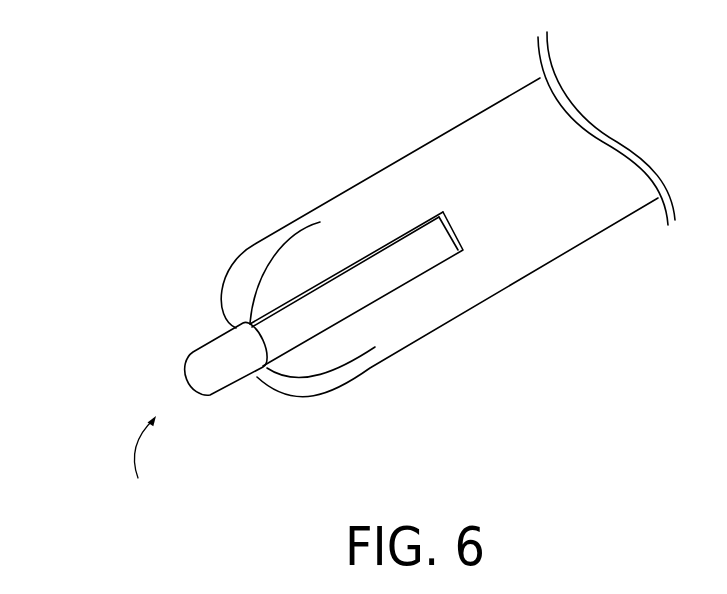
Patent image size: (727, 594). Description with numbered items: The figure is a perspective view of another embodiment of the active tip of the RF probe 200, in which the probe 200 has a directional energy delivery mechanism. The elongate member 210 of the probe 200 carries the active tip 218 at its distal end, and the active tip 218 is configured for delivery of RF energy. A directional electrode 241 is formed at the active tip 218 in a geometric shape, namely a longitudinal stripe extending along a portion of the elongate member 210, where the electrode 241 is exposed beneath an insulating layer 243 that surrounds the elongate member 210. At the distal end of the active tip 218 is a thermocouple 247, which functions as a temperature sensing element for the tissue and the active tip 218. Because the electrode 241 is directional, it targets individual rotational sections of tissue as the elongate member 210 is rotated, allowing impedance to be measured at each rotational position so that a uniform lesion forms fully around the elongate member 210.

The probe 200 is at (178, 125).
The elongate member 210 is at (468, 120).
The insulating layer 243 is at (370, 247).
The electrode 241 is at (317, 307).
The thermocouple 247 is at (193, 370).
The active tip 218 is at (166, 460).